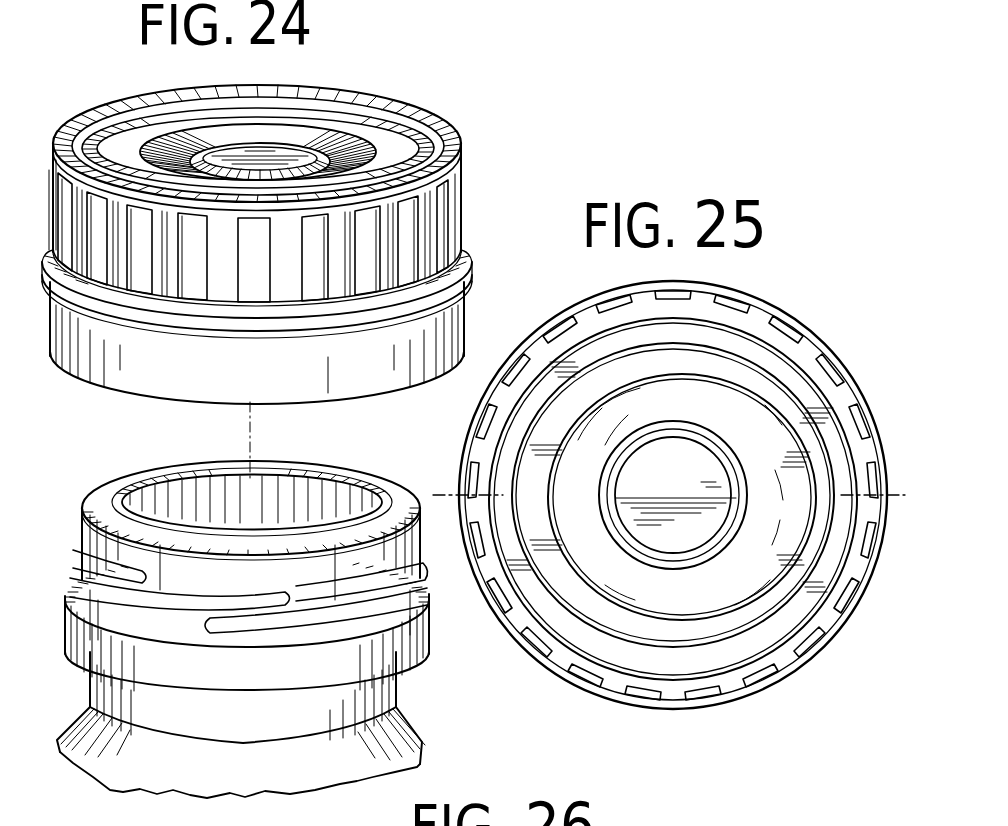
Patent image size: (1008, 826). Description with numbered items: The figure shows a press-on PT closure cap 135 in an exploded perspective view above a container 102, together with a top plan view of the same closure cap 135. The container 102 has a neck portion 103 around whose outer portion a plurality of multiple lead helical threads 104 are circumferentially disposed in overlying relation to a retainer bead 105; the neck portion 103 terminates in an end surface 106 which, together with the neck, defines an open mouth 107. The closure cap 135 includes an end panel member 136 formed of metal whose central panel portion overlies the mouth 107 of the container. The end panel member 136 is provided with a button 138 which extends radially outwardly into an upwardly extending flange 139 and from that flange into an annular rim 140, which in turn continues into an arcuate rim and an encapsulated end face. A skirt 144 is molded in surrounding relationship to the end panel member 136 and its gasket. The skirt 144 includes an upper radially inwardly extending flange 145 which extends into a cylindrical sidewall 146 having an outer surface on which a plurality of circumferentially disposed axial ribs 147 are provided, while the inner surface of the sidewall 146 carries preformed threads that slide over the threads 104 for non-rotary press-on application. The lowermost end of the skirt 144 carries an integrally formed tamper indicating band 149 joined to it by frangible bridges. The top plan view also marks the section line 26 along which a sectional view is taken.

In FIG. 24, the container 102 is at (62, 763).
In FIG. 24, the neck portion 103 is at (83, 520).
In FIG. 24, the multiple lead helical threads 104 is at (68, 553).
In FIG. 24, the retainer bead 105 is at (72, 630).
In FIG. 24, the end surface 106 is at (141, 477).
In FIG. 24, the open mouth 107 is at (310, 496).
In FIG. 24, the closure cap 135 is at (493, 147).
In FIG. 25, the closure cap 135 is at (829, 323).
In FIG. 24, the end panel member 136 is at (289, 135).
In FIG. 25, the end panel member 136 is at (790, 380).
In FIG. 24, the button 138 is at (302, 152).
In FIG. 25, the button 138 is at (690, 483).
In FIG. 24, the upwardly extending flange 139 is at (188, 140).
In FIG. 25, the upwardly extending flange 139 is at (690, 416).
In FIG. 24, the annular rim 140 is at (126, 138).
In FIG. 25, the annular rim 140 is at (742, 347).
In FIG. 24, the skirt 144 is at (465, 210).
In FIG. 24, the upper radially inwardly extending flange 145 is at (428, 134).
In FIG. 25, the upper radially inwardly extending flange 145 is at (826, 565).
In FIG. 24, the cylindrical sidewall 146 is at (62, 207).
In FIG. 24, the axial ribs 147 is at (452, 248).
In FIG. 24, the tamper indicating band 149 is at (58, 338).
In FIG. 25, the section line 26- 26 is at (445, 508).